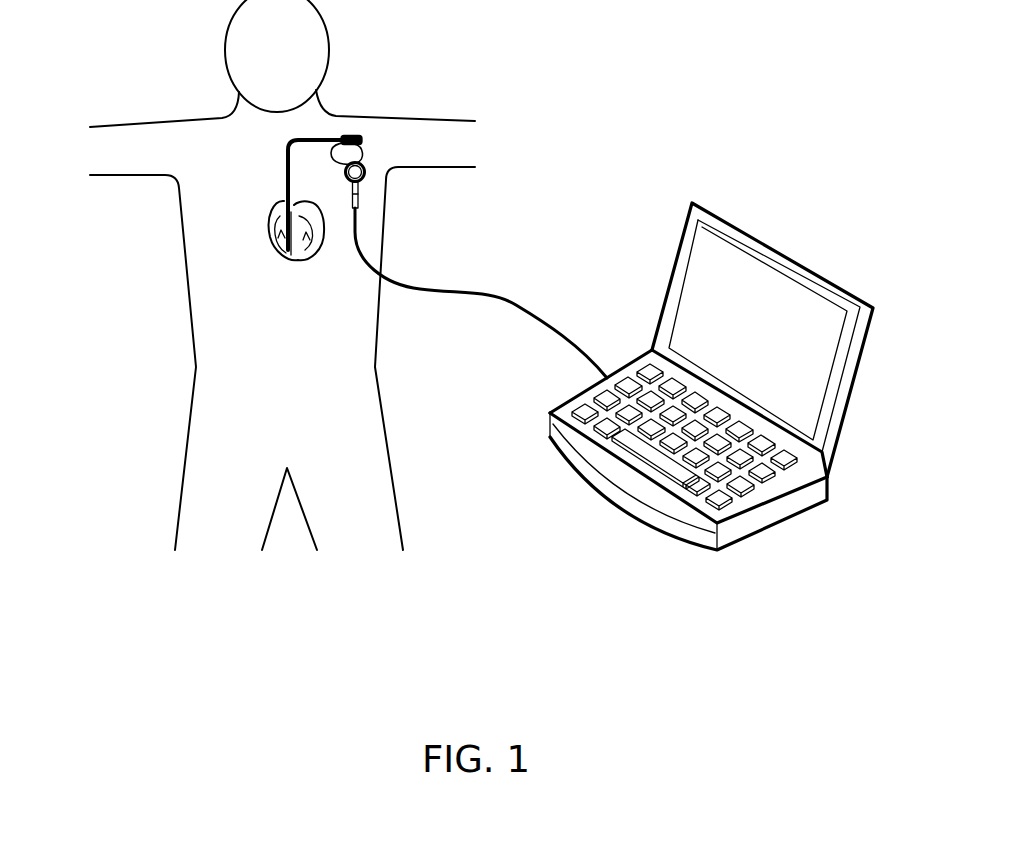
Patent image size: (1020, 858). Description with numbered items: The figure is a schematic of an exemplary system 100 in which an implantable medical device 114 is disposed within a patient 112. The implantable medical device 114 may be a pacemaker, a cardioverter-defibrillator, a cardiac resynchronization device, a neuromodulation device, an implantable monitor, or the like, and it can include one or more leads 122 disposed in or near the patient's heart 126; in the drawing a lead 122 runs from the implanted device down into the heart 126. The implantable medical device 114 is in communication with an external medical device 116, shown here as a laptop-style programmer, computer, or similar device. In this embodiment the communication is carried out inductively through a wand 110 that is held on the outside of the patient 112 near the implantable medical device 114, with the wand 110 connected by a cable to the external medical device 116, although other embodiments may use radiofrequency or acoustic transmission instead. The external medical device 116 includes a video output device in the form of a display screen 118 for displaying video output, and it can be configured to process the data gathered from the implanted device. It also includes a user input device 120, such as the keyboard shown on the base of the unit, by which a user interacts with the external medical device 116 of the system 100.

The system 100 is at (470, 465).
The wand 110 is at (358, 205).
The patient 112 is at (157, 150).
The implantable medical device 114 is at (362, 150).
The external medical device 116 is at (765, 505).
The display screen 118 is at (763, 298).
The user input device 120 is at (790, 471).
The lead 122 is at (285, 158).
The heart 126 is at (304, 256).